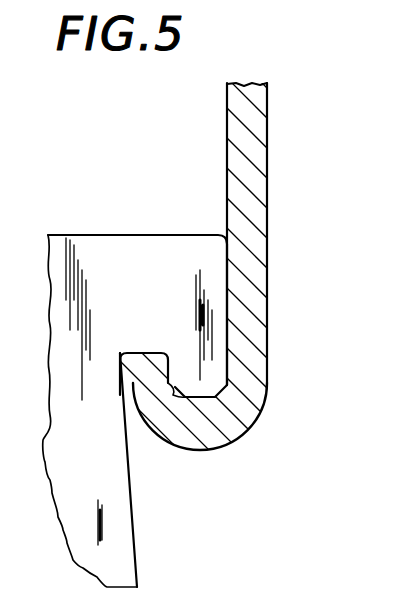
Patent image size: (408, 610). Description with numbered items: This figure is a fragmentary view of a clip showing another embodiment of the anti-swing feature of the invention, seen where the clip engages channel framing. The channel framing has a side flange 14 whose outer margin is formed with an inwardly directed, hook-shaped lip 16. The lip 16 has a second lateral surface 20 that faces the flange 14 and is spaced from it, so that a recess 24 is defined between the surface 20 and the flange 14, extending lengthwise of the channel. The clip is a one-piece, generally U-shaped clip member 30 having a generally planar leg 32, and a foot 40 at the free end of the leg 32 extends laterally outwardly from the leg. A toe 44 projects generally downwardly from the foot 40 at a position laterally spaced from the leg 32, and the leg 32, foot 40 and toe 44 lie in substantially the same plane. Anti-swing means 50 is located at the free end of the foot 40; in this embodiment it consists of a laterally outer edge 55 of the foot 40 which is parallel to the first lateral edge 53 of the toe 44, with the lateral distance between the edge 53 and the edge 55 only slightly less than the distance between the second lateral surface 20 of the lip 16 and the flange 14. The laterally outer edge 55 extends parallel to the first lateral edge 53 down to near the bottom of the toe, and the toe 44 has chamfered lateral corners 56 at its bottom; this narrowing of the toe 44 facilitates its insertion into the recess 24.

The side flange 14 is at (267, 178).
The hook-shaped lip 16 is at (191, 418).
The second lateral surface 20 is at (177, 410).
The recess 24 is at (173, 417).
The clip member 30 is at (83, 235).
The leg 32 is at (100, 470).
The foot 40 is at (147, 267).
The toe 44 is at (193, 430).
The anti-swing means 50 is at (245, 303).
The first lateral edge 53 is at (160, 355).
The laterally outer edge 55 is at (240, 278).
The chamfered lateral corner 56 is at (180, 410).